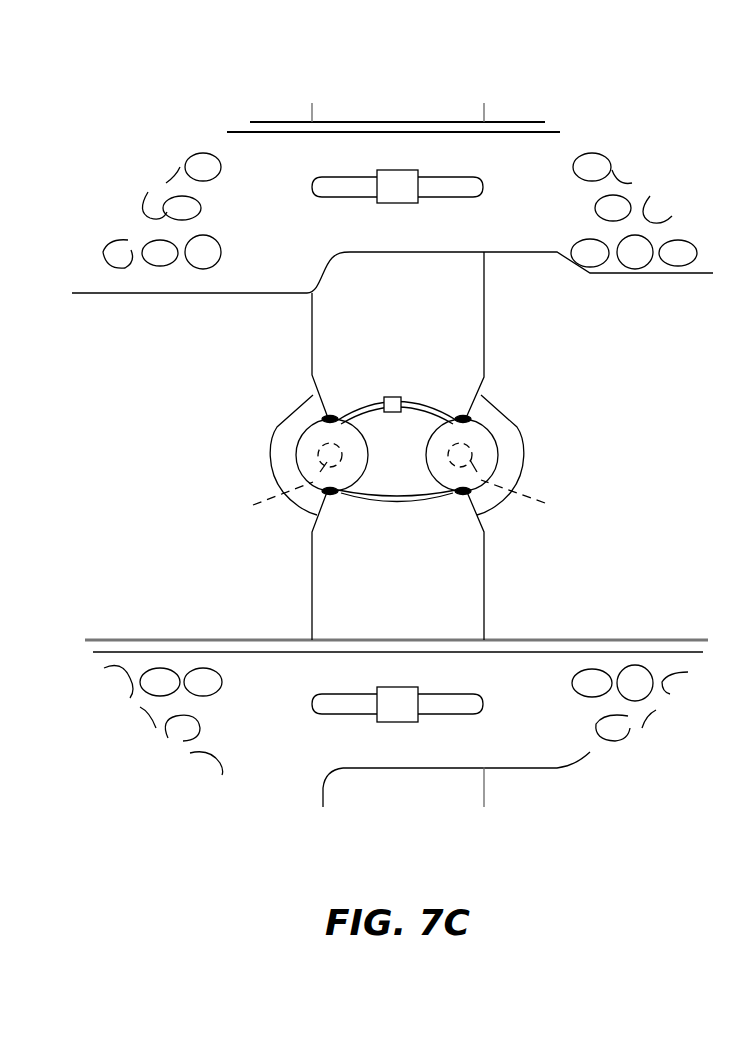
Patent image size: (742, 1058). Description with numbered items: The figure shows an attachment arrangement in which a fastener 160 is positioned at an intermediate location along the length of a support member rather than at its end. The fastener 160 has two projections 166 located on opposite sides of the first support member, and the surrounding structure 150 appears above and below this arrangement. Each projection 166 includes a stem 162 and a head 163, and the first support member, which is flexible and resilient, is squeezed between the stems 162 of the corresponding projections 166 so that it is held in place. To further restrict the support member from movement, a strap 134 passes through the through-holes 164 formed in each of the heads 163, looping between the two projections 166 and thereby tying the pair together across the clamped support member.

The connector body 150 is at (553, 173).
The strap 134 is at (430, 400).
The fastener 160 is at (513, 462).
The stem 162 is at (400, 507).
The head 163 is at (303, 430).
The through-hole 164 is at (327, 413).
The projection 166 is at (291, 443).